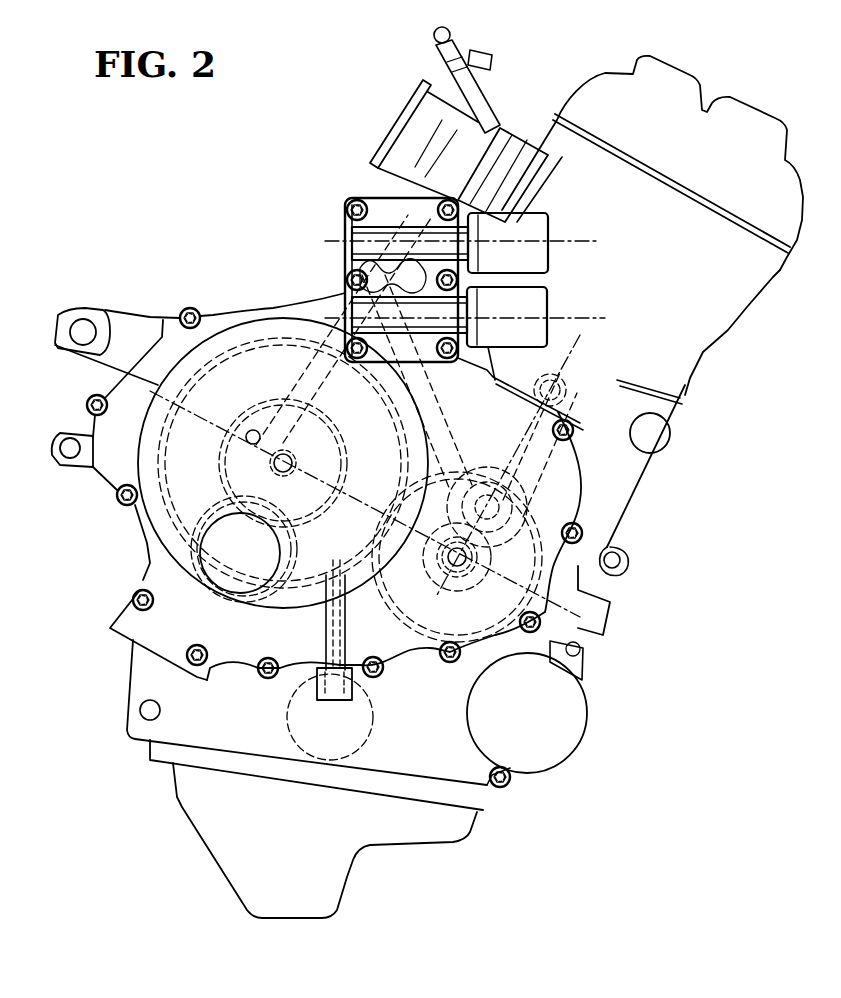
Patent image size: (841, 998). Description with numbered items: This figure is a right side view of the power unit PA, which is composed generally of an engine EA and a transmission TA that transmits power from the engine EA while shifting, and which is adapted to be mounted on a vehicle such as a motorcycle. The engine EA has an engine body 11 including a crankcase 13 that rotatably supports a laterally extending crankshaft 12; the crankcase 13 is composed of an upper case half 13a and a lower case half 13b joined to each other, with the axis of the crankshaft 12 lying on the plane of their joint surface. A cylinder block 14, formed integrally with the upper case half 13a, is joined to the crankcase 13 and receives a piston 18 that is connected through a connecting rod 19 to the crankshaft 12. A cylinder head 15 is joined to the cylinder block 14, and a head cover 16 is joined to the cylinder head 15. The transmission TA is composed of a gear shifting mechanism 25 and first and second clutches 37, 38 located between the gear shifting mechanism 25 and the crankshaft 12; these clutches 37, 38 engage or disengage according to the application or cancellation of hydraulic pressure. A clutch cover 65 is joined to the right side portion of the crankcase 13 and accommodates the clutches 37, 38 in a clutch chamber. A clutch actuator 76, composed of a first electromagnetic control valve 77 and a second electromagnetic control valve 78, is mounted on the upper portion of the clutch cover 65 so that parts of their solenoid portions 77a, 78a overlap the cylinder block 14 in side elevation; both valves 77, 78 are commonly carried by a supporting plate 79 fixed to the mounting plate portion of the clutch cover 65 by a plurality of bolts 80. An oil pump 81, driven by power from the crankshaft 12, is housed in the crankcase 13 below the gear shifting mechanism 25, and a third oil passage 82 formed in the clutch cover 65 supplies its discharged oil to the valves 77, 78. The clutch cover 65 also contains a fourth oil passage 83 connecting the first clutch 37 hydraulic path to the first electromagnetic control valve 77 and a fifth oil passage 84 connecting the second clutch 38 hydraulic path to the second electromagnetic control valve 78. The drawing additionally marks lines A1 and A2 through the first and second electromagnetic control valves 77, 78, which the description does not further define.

The engine body 11 is at (138, 740).
The crankshaft 12 is at (427, 618).
The crankcase 13 is at (635, 635).
The upper case half 13a is at (617, 607).
The lower case half 13b is at (615, 673).
The cylinder block 14 is at (633, 480).
The cylinder head 15 is at (735, 350).
The head cover 16 is at (597, 88).
The piston 18 is at (560, 375).
The connecting rod 19 is at (507, 470).
The gear shifting mechanism 25 is at (292, 540).
The first clutch 37 is at (208, 463).
The second clutch 38 is at (72, 450).
The clutch cover 65 is at (155, 585).
The clutch actuator 76 is at (242, 158).
The first electromagnetic control valve 77 is at (343, 297).
The solenoid portion 77a is at (553, 307).
The second electromagnetic control valve 78 is at (343, 232).
The solenoid portion 78a is at (588, 240).
The supporting plate 79 is at (388, 212).
The bolts 80 is at (355, 200).
The oil pump 81 is at (274, 717).
The third oil passage 82 is at (395, 376).
The fourth oil passage 83 is at (283, 463).
The fifth oil passage 84 is at (310, 377).
The first valve axis A1 is at (583, 317).
The second valve axis A2 is at (593, 240).
The power unit PA is at (227, 258).
The engine EA is at (150, 346).
The transmission TA is at (245, 396).